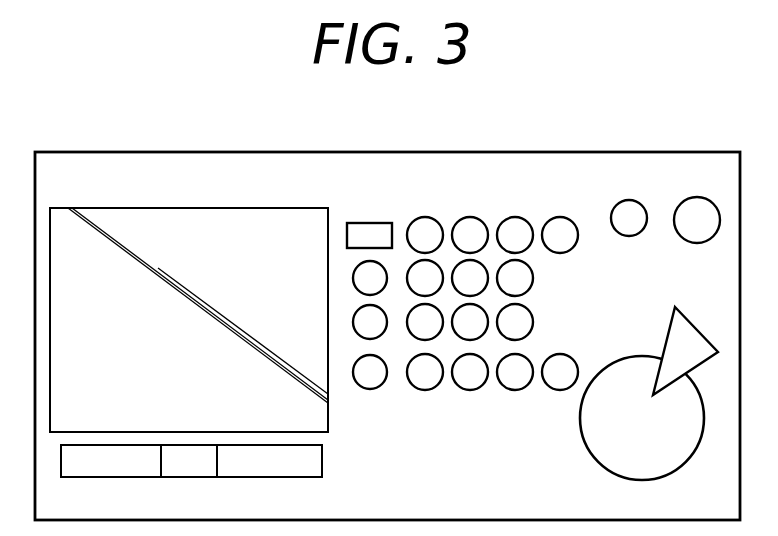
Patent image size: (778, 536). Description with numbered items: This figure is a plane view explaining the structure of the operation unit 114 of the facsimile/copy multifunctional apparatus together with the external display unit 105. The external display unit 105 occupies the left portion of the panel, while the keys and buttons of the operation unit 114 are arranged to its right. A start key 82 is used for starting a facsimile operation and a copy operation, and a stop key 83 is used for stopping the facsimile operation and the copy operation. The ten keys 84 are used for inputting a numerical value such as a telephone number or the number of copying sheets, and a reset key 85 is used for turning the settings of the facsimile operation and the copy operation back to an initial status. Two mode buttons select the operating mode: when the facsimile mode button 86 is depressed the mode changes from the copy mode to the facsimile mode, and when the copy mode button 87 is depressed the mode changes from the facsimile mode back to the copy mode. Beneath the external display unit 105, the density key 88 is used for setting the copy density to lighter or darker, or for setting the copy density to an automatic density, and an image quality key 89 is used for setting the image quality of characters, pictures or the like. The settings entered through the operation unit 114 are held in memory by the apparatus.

The operation unit 114 is at (597, 150).
The external display unit 105 is at (186, 208).
The reset key 85 is at (370, 222).
The ten keys 84 is at (533, 410).
The image quality key 89 is at (370, 390).
The copy mode button 87 is at (631, 237).
The facsimile mode button 86 is at (701, 244).
The start key 82 is at (580, 437).
The stop key 83 is at (668, 330).
The density key 88 is at (322, 484).